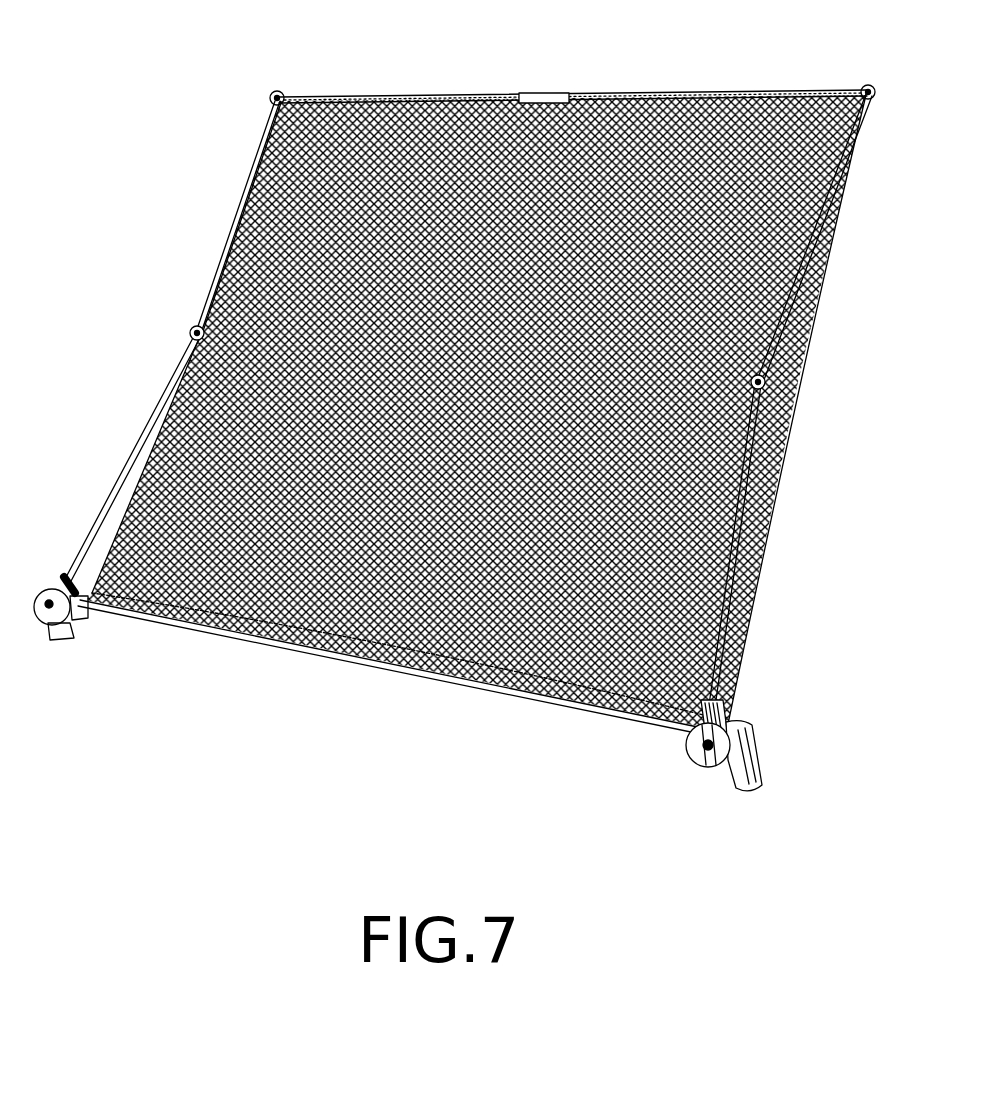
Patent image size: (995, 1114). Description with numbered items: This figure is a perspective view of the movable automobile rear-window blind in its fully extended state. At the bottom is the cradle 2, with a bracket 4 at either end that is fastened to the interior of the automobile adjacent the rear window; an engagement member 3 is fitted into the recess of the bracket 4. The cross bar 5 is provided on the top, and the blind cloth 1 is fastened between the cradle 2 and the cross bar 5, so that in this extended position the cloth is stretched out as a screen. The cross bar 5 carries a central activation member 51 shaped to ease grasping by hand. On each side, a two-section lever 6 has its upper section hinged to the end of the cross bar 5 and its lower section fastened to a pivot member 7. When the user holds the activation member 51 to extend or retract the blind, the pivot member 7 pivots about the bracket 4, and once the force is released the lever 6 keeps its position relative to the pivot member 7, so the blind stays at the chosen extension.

The blind cloth 1 is at (765, 455).
The cradle 2 is at (545, 708).
The engagement member 3 is at (713, 775).
The bracket 4 is at (757, 775).
The cross bar 5 is at (701, 92).
The central activation member 51 is at (546, 97).
The two-section lever 6 is at (802, 279).
The pivot member 7 is at (727, 723).